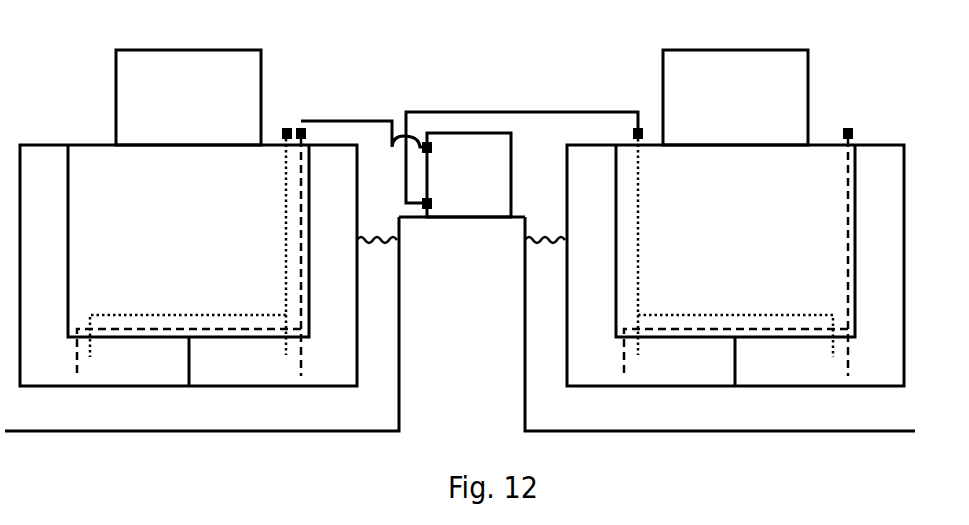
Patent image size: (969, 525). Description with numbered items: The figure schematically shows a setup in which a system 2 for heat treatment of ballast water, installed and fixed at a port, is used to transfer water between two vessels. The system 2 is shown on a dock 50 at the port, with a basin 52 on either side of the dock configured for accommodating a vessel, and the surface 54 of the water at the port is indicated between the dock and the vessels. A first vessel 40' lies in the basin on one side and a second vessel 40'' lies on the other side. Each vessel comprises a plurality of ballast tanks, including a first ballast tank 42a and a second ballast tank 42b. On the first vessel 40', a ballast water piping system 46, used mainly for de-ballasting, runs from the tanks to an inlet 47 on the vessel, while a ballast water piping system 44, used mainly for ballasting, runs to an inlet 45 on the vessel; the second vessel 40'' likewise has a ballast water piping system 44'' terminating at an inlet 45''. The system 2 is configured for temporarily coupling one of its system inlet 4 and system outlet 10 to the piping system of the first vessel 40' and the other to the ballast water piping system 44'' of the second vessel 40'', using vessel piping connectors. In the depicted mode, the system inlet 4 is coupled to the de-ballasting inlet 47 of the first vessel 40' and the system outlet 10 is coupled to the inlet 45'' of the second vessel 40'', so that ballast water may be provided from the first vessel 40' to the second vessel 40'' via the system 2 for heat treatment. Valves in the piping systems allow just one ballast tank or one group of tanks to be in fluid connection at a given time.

The first vessel 40' is at (188, 212).
The second vessel 40'' is at (746, 211).
The first ballast tank 42a is at (349, 373).
The second ballast tank 42b is at (66, 373).
The ballast water piping system 44 is at (188, 248).
The ballast water piping system 44'' is at (735, 248).
The inlet on the vessel for ballast water piping system 45 is at (249, 121).
The inlet on the vessel for ballast water piping system 45'' is at (702, 113).
The ballast water piping system 46 is at (299, 218).
The inlet on the vessel for ballast water piping system 47 is at (298, 126).
The system inlet 4 is at (303, 126).
The system outlet 10 is at (635, 128).
The system for heat treatment of ballast water 2 is at (476, 186).
The dock at a port 50 is at (414, 219).
The surface of the water 54 is at (399, 241).
The basin 52 is at (399, 271).